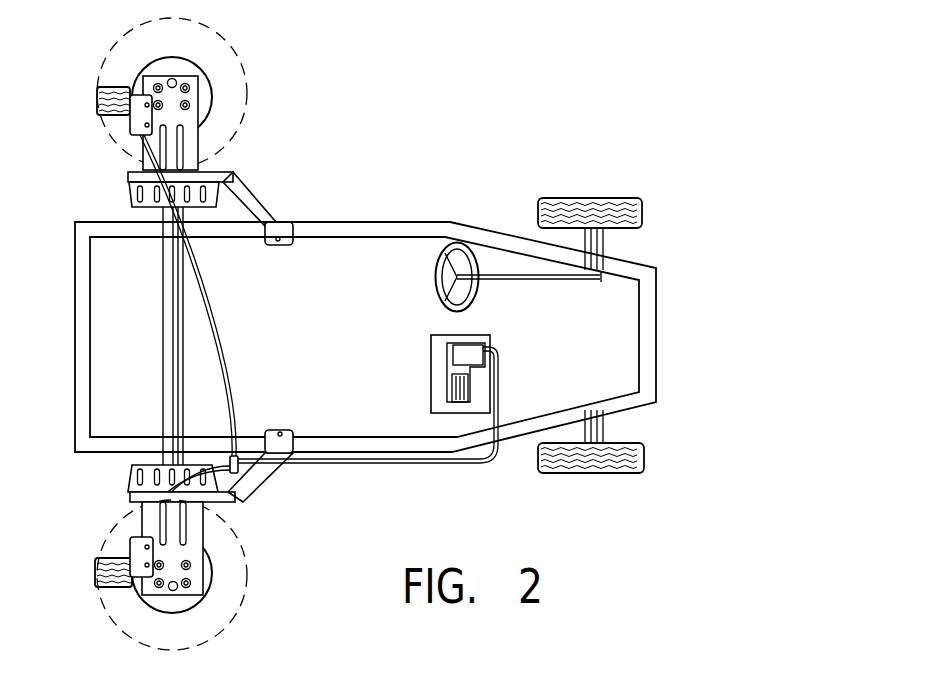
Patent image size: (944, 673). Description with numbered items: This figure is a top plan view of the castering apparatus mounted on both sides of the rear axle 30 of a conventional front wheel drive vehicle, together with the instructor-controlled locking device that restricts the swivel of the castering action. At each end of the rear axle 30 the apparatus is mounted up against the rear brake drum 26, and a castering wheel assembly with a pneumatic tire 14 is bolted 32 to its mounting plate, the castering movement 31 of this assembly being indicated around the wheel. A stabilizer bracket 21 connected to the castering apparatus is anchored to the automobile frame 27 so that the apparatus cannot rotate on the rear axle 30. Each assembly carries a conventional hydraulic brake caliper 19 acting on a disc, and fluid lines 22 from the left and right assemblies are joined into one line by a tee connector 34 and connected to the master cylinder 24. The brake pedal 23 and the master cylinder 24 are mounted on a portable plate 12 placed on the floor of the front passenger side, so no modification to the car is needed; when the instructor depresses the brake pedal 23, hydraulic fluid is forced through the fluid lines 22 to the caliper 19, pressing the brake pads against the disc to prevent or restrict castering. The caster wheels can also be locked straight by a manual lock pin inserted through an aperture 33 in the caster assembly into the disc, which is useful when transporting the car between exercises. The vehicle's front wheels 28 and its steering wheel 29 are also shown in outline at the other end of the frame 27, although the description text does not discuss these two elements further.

The portable plate 12 is at (456, 361).
The pneumatic tire 14 is at (97, 100).
The brake caliper 19 is at (130, 124).
The stabilizer bracket 21 is at (262, 203).
The flexible fluid line 22 is at (213, 308).
The brake pedal 23 is at (447, 385).
The master cylinder 24 is at (475, 350).
The rear brake drum 26 is at (130, 487).
The automobile frame 27 is at (372, 222).
The rear wheel 28 is at (574, 198).
The steering wheel 29 is at (478, 296).
The rear axle 30 is at (163, 378).
The castering movement 31 is at (250, 104).
The bolt 32 is at (190, 86).
The aperture 33 is at (175, 79).
The tee connector 34 is at (245, 456).